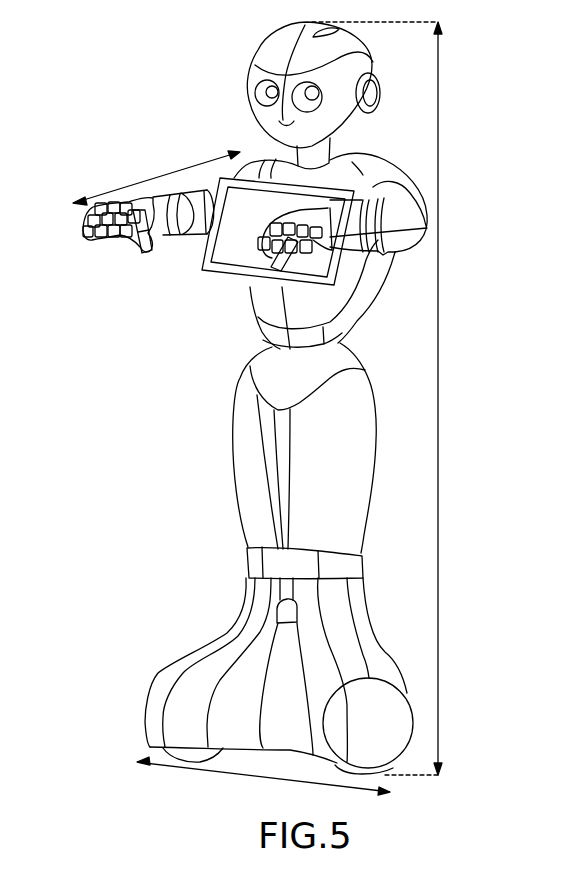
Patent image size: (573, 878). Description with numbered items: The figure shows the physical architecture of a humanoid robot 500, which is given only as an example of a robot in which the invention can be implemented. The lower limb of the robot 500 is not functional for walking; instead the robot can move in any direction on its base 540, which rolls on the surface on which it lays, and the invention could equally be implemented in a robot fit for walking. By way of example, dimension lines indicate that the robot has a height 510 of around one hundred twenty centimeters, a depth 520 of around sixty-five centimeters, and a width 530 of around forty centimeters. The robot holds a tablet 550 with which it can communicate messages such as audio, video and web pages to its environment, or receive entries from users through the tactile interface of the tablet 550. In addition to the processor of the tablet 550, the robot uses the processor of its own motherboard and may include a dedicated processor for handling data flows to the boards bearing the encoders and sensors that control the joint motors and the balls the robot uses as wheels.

The robot 500 is at (213, 462).
The height 510 is at (440, 375).
The depth 520 is at (163, 178).
The width 530 is at (240, 777).
The base 540 is at (142, 702).
The tablet 550 is at (200, 279).